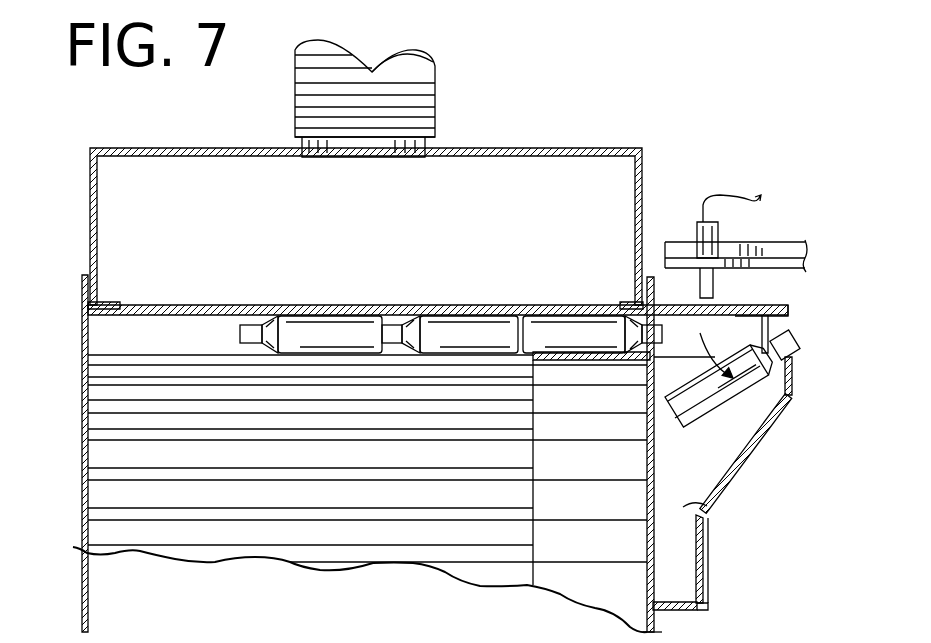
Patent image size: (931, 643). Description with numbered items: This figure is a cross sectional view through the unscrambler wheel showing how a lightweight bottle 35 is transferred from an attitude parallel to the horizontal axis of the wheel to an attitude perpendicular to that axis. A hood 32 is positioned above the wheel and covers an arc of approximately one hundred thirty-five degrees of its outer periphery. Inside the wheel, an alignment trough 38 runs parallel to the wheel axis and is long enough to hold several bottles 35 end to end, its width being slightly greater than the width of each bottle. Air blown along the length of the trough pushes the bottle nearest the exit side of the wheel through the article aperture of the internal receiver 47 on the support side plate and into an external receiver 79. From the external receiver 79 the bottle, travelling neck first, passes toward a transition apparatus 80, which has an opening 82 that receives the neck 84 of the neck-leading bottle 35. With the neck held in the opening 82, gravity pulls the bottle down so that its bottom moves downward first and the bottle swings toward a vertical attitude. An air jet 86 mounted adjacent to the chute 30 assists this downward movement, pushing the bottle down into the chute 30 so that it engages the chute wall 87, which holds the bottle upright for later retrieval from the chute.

The chute 30 is at (705, 510).
The hood 32 is at (517, 148).
The bottle 35 is at (728, 394).
The alignment trough 38 is at (108, 338).
The internal receiver 47 is at (574, 305).
The external receiver 79 is at (733, 322).
The transition apparatus 80 is at (770, 322).
The opening 82 is at (772, 337).
The neck 84 is at (797, 352).
The air jet 86 is at (715, 278).
The chute wall 87 is at (737, 484).